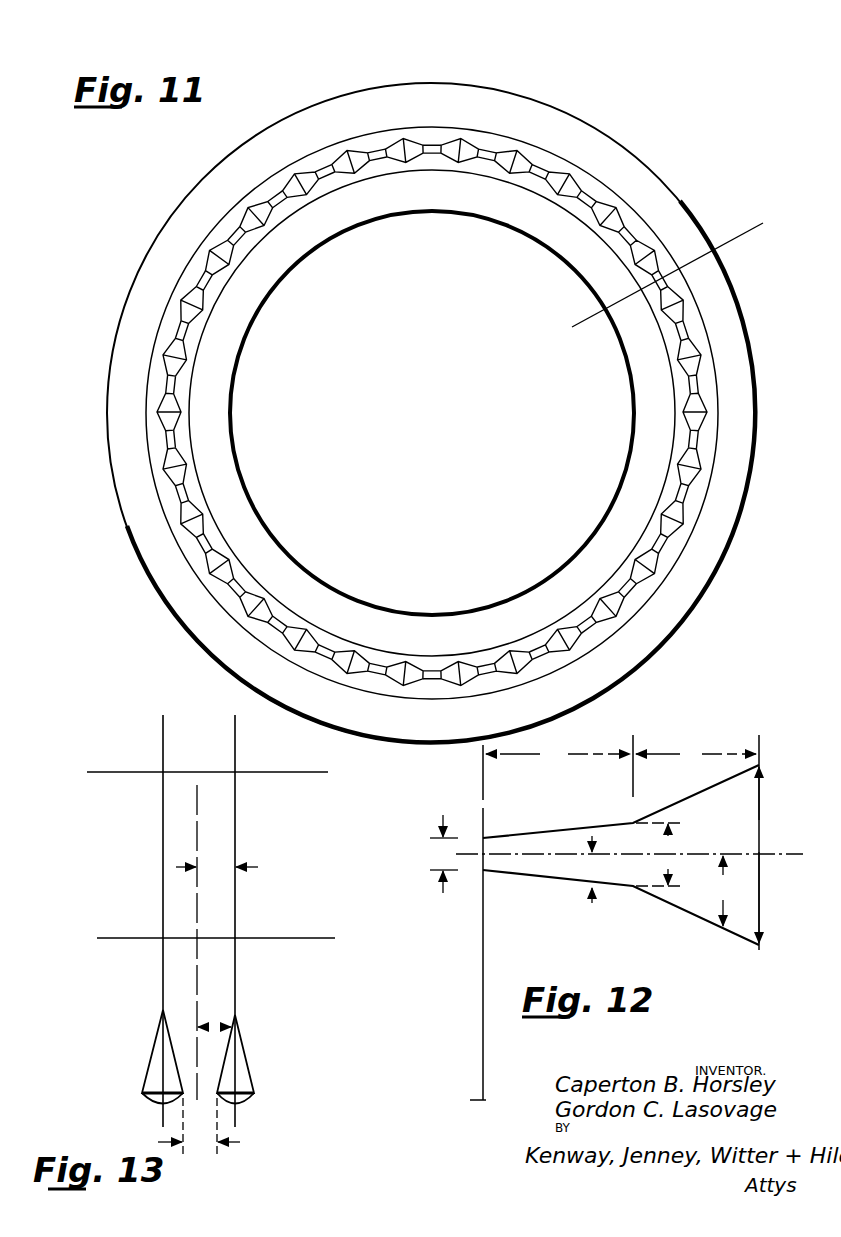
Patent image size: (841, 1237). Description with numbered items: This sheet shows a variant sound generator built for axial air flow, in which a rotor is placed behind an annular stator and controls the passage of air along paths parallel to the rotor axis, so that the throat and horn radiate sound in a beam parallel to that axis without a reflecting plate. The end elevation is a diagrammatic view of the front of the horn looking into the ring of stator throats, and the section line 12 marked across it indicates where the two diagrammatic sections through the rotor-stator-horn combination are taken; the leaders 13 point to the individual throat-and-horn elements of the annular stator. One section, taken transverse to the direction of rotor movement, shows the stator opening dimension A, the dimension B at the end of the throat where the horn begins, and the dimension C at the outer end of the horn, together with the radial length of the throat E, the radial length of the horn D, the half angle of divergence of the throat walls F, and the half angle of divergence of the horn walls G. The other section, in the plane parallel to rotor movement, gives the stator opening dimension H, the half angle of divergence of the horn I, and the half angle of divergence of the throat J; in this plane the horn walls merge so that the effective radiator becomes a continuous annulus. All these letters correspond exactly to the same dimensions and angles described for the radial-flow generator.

In FIG. 11, the section line 12— 12 is at (580, 322).
In FIG. 11, the chain link 13 is at (385, 147).
In FIG. 12, the stator opening dimension A is at (444, 854).
In FIG. 12, the throat end dimension B is at (659, 854).
In FIG. 12, the horn outer end dimension C is at (759, 855).
In FIG. 12, the radial length of the horn D is at (696, 755).
In FIG. 12, the radial length of the throat E is at (558, 755).
In FIG. 12, the half angle of divergence of the throat walls F is at (591, 869).
In FIG. 12, the half angle of divergence of the horn walls G is at (722, 891).
In FIG. 13, the stator opening dimension H is at (199, 1128).
In FIG. 13, the half angle of divergence of the horn I is at (217, 868).
In FIG. 13, the half angle of divergence of the throat J is at (214, 1028).